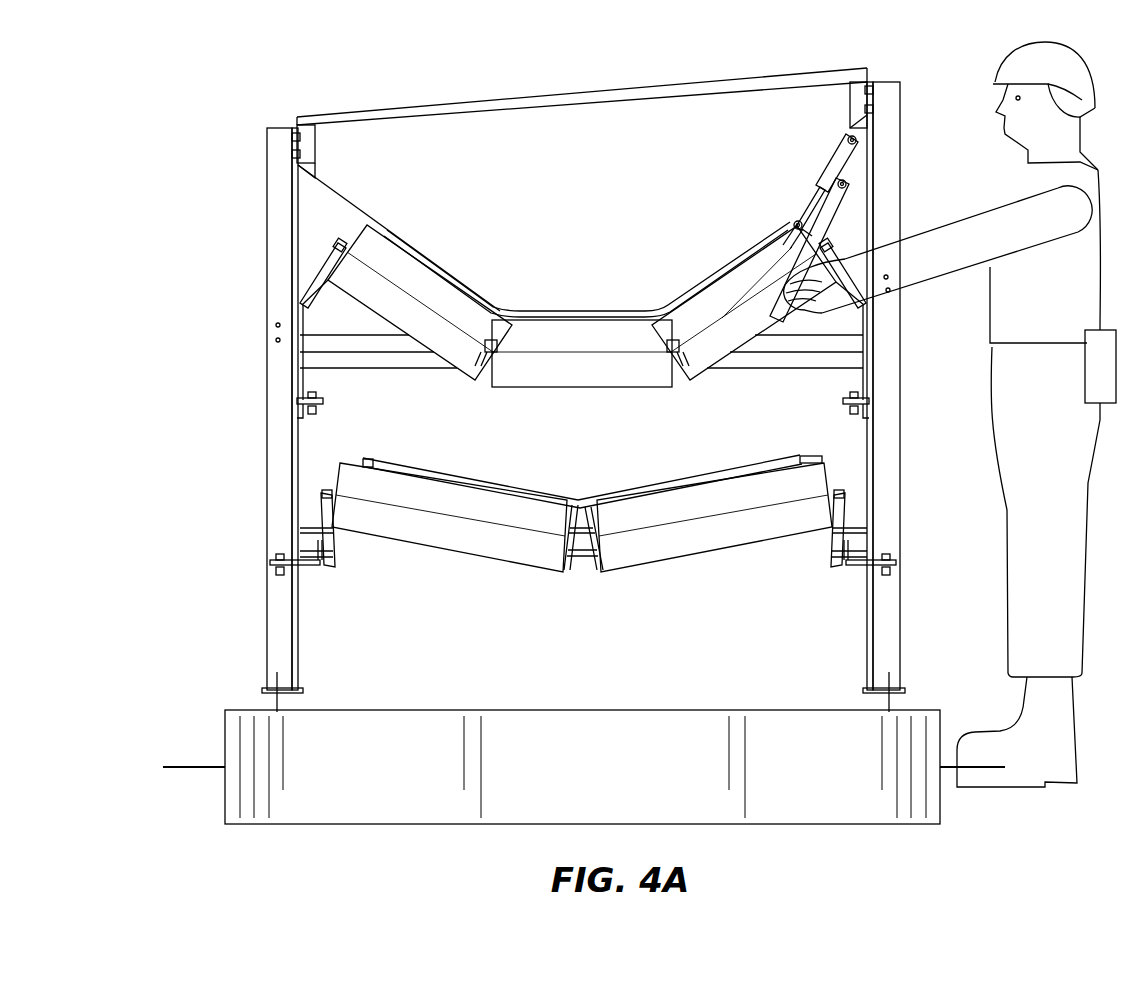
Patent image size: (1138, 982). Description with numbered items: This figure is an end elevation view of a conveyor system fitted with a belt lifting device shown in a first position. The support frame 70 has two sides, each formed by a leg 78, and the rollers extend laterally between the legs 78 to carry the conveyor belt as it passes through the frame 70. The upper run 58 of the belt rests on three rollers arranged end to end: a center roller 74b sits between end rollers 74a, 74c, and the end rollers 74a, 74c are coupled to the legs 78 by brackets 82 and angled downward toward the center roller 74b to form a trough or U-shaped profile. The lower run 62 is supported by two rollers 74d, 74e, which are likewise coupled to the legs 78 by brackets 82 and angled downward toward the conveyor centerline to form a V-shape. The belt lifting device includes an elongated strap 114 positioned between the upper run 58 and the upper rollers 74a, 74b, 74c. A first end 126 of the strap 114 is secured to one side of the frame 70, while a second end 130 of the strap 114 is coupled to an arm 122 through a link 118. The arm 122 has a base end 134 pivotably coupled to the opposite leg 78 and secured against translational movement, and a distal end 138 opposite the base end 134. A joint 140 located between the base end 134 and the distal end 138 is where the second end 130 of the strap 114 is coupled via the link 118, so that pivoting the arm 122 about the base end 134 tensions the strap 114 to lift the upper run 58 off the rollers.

The support frame 70 is at (196, 157).
The upper run 58 is at (445, 268).
The lower run 62 is at (603, 490).
The end roller 74a is at (423, 310).
The center roller 74b is at (567, 377).
The end roller 74c is at (715, 300).
The lower roller 74d is at (413, 492).
The lower roller 74e is at (727, 495).
The leg 78 is at (286, 446).
The bracket 82 is at (318, 290).
The strap 114 is at (357, 212).
The link 118 is at (828, 170).
The arm 122 is at (850, 160).
The first end 126 is at (316, 176).
The second end 130 is at (787, 225).
The base end 134 is at (851, 100).
The distal end 138 is at (752, 252).
The joint 140 is at (830, 183).